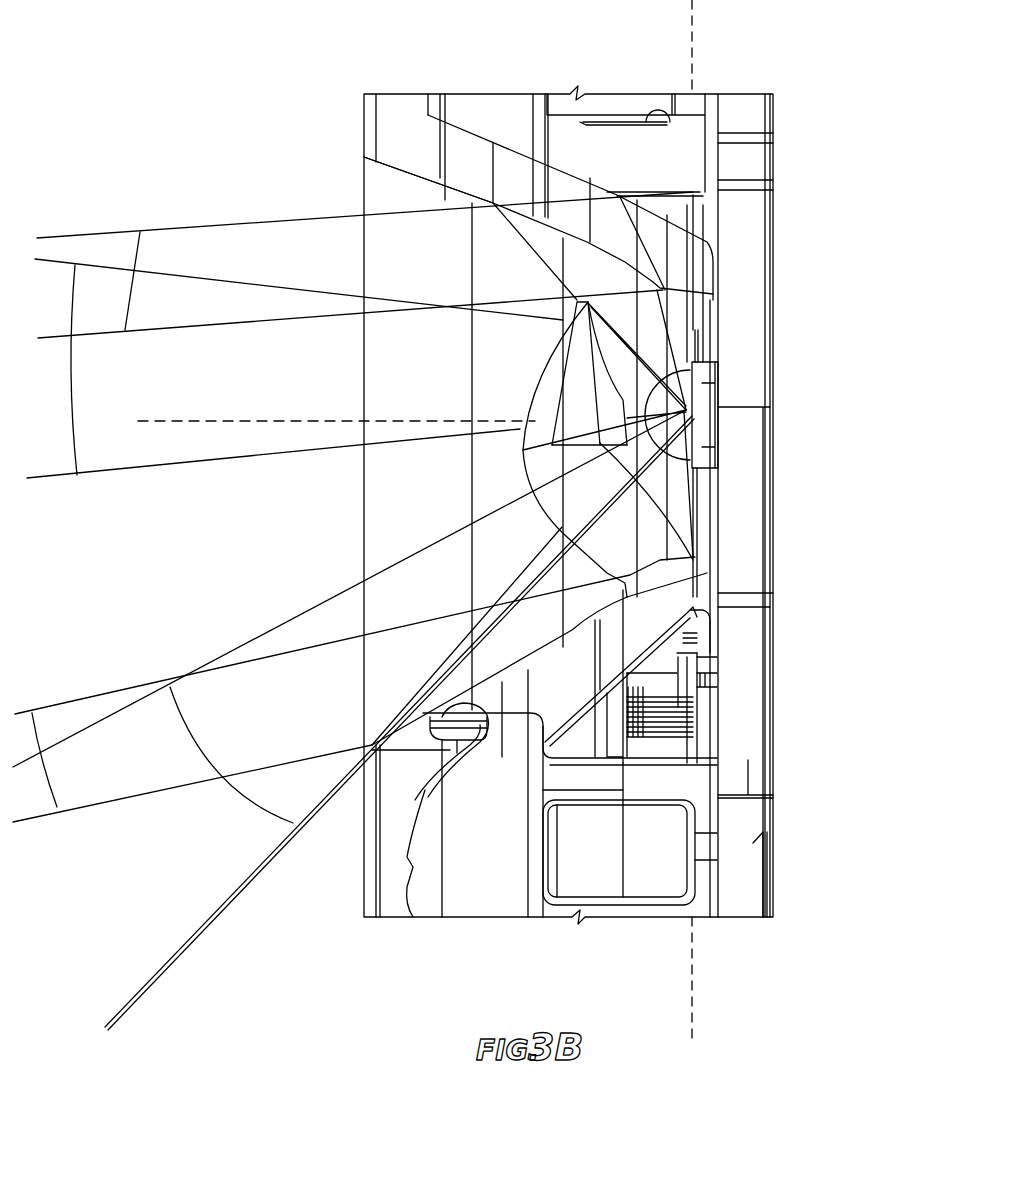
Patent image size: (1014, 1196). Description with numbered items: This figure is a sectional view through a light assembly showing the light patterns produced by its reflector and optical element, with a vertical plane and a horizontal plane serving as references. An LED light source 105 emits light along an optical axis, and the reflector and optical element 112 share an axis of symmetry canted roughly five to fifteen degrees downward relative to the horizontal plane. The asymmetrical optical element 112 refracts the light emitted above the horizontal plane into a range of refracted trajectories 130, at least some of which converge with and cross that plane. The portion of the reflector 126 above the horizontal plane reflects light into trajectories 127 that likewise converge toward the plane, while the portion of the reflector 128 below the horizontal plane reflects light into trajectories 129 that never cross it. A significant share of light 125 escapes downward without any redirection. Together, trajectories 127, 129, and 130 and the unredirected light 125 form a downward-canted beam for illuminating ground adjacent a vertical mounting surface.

The LED light source 105 is at (705, 402).
The optical element 112 is at (577, 393).
The unredirected light 125 is at (260, 800).
The portion of the reflector above plane P4 126 is at (380, 172).
The range of reflected trajectories 127 is at (140, 257).
The portion of the reflector below plane P4 128 is at (707, 573).
The range of reflected trajectories 129 is at (33, 732).
The range of refracted trajectories 130 is at (73, 295).